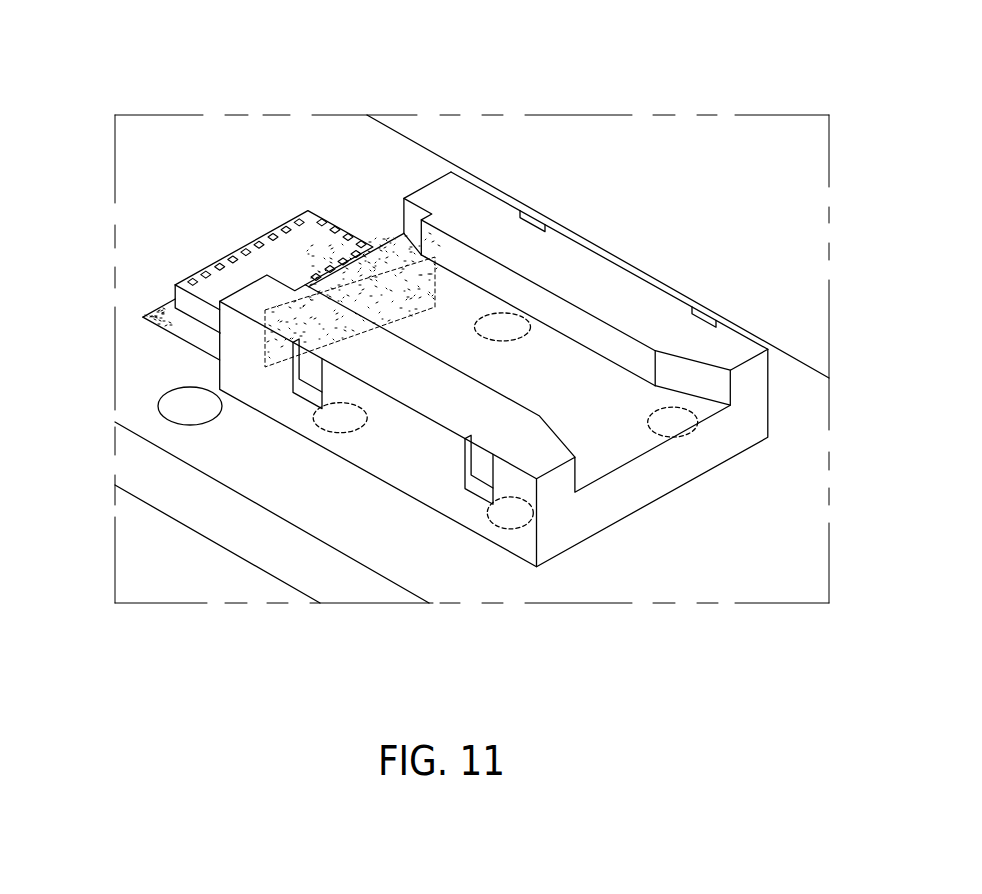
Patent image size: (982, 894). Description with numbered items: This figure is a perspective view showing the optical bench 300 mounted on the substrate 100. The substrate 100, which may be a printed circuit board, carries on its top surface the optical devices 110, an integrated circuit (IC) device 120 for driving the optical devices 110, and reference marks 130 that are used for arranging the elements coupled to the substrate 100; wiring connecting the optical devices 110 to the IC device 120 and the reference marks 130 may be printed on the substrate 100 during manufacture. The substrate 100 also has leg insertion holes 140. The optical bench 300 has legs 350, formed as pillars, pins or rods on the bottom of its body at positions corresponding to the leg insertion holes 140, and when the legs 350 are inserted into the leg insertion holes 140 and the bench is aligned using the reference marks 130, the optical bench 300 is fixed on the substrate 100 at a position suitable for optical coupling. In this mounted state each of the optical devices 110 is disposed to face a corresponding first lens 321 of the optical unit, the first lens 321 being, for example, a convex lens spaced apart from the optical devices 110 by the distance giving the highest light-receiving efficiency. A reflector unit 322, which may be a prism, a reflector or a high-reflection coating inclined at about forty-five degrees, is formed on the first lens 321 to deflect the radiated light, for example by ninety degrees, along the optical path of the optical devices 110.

The substrate 100 is at (717, 313).
The optical devices 110 is at (143, 317).
The integrated circuit (IC) device 120 is at (266, 263).
The reference marks 130 is at (172, 408).
The leg insertion holes 140 is at (335, 468).
The optical bench 300 is at (769, 398).
The first lens 321 is at (323, 266).
The reflector unit 322 is at (367, 240).
The legs 350 is at (318, 425).